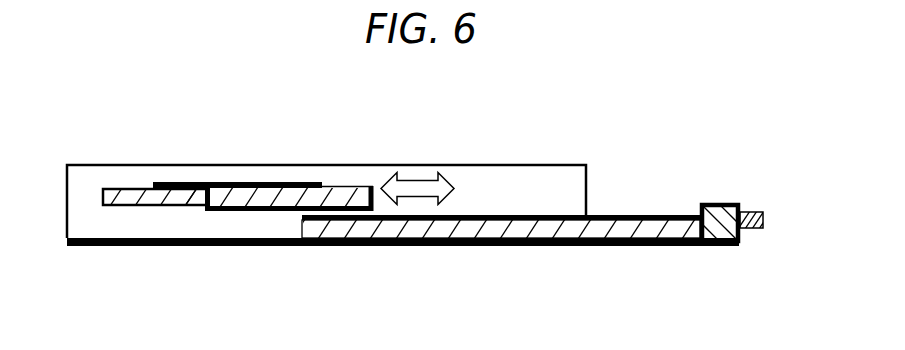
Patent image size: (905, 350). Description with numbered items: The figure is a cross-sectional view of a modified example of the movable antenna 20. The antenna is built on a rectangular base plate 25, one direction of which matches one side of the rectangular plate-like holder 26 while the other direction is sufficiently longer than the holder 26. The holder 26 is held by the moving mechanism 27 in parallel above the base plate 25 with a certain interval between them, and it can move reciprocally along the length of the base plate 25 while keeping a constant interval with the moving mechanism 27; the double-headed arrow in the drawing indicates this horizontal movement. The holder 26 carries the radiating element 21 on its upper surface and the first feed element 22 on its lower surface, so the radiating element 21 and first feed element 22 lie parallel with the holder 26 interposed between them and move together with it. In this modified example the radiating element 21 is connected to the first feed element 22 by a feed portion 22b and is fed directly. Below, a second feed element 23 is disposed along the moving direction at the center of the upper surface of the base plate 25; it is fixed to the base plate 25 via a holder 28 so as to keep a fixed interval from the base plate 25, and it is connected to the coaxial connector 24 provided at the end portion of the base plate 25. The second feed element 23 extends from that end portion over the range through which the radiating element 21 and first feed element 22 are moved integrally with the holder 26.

The movable antenna 20 is at (394, 275).
The radiating element 21 is at (220, 182).
The first feed element 22 is at (270, 211).
The feed portion 22b is at (197, 206).
The second feed element 23 is at (643, 215).
The coaxial connector 24 is at (750, 212).
The base plate 25 is at (120, 246).
The holder 26 is at (137, 188).
The moving mechanism 27 is at (95, 165).
The holder 28 is at (533, 222).